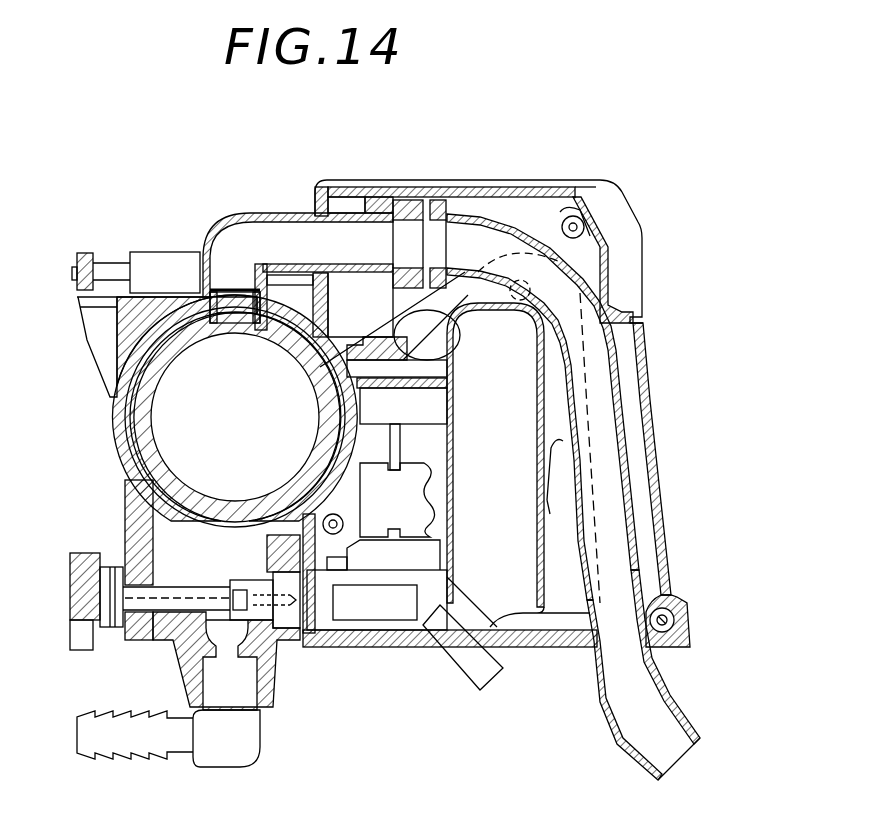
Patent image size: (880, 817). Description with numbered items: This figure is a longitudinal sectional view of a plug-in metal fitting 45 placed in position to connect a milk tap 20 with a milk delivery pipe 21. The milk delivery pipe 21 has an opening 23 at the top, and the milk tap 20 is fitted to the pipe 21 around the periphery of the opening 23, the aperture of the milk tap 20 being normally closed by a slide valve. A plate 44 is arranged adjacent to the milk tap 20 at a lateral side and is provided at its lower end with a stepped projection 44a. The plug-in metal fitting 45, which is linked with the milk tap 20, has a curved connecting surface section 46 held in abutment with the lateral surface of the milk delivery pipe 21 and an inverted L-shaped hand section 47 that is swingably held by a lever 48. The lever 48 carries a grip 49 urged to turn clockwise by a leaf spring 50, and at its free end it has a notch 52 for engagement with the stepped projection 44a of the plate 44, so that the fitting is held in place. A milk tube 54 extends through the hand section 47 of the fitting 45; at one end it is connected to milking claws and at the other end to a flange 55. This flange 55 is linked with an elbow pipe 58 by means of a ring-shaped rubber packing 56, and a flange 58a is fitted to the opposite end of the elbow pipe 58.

The milk tap 20 is at (120, 345).
The milk delivery pipe 21 is at (120, 410).
The opening 23 is at (228, 322).
The plate 44 is at (300, 362).
The stepped projection 44a is at (448, 350).
The plug-in metal fitting 45 is at (628, 220).
The curved connecting surface section 46 is at (370, 490).
The hand section 47 is at (656, 386).
The lever 48 is at (455, 266).
The grip 49 is at (537, 440).
The leaf spring 50 is at (535, 478).
The notch 52 is at (460, 327).
The milk tube 54 is at (664, 700).
The flange 55 is at (460, 262).
The ring-shaped rubber packing 56 is at (407, 200).
The elbow pipe 58 is at (251, 210).
The flange 58a is at (376, 197).